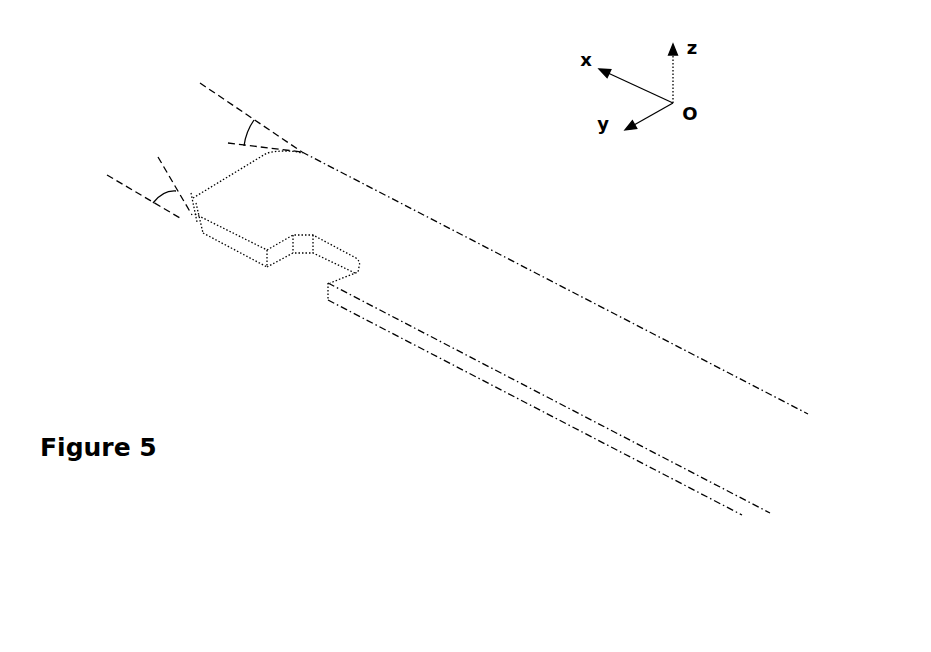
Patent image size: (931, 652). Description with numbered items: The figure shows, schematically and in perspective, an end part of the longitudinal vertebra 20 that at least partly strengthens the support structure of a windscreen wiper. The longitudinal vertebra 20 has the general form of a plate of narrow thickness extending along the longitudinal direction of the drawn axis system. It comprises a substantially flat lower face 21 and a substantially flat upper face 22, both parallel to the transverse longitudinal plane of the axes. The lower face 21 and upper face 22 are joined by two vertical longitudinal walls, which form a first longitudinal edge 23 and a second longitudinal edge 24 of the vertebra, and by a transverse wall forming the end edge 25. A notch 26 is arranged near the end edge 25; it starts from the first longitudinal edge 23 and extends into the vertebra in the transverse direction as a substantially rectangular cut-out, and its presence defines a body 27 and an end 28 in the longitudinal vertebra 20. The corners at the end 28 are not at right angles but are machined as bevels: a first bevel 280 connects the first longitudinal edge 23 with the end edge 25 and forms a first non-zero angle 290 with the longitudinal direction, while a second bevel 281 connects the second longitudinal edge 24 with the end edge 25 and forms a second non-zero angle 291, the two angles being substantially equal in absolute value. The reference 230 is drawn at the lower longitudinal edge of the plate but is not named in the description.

The longitudinal vertebra 20 is at (566, 345).
The lower face 21 is at (570, 427).
The upper face 22 is at (478, 298).
The first longitudinal edge 23 is at (480, 366).
The second longitudinal edge 24 is at (648, 330).
The end edge 25 is at (230, 173).
The notch 26 is at (308, 272).
The body 27 is at (702, 413).
The end 28 is at (272, 189).
The bottom edge of plate 230 is at (668, 477).
The first bevel 280 is at (203, 232).
The second bevel 281 is at (292, 152).
The first angle 290 is at (155, 186).
The second angle 291 is at (228, 125).